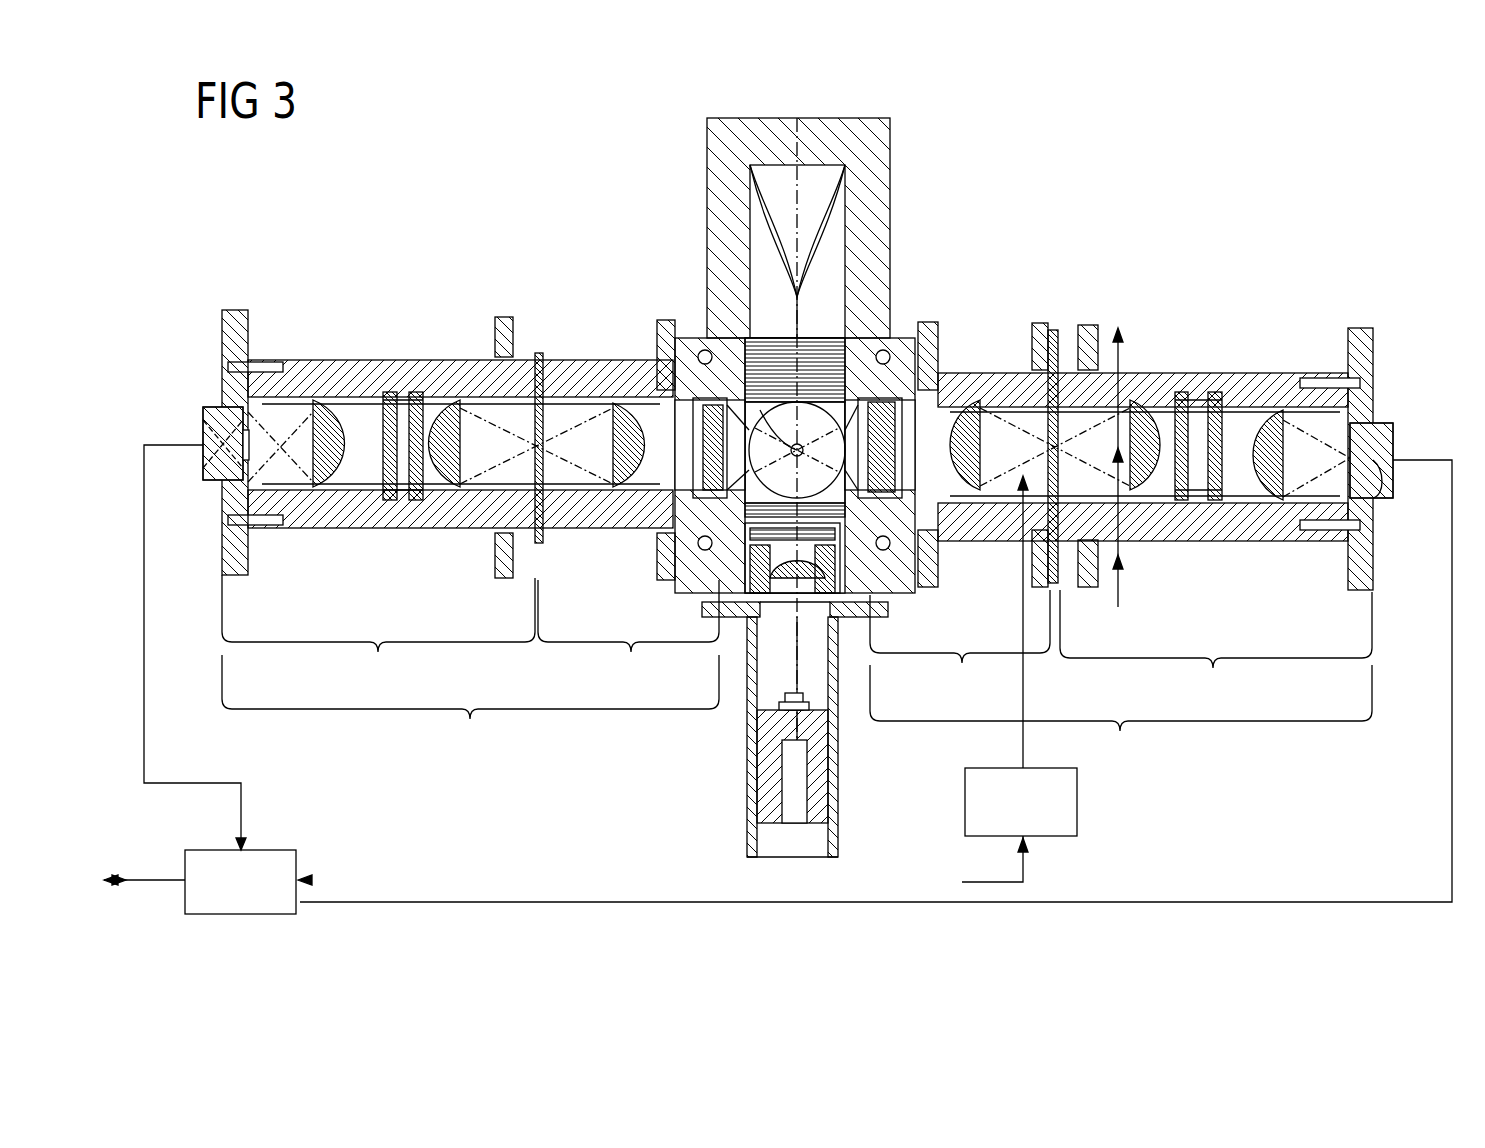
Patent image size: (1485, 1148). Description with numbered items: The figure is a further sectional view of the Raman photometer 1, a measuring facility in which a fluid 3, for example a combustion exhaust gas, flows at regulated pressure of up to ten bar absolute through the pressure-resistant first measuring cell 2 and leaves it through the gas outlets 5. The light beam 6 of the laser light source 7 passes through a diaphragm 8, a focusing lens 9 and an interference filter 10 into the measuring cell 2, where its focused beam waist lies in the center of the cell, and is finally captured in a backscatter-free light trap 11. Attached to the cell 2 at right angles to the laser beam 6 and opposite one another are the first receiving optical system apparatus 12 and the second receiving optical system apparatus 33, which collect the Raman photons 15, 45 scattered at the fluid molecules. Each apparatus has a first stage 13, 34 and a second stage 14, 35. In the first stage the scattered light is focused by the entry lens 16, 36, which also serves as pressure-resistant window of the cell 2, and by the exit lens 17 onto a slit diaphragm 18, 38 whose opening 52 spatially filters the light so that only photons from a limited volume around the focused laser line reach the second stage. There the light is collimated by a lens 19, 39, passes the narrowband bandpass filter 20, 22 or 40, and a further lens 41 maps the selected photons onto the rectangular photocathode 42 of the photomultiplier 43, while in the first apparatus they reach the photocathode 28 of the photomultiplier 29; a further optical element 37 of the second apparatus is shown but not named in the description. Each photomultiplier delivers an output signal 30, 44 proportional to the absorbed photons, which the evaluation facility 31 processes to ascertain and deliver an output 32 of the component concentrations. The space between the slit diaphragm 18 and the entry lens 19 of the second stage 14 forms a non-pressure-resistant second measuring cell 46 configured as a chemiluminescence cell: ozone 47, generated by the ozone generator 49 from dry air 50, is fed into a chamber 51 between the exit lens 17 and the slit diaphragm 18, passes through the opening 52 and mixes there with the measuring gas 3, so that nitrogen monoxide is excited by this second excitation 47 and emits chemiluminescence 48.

The Raman photometer 1 is at (258, 243).
The first measuring cell 2 is at (676, 598).
The fluid 3 is at (1122, 604).
The gas outlets 5 is at (777, 348).
The laser beam 6 is at (805, 672).
The laser light source 7 is at (752, 795).
The diaphragm 8 is at (772, 628).
The focusing lens 9 is at (850, 616).
The interference filter 10 is at (905, 595).
The backscatter-free light trap 11 is at (800, 262).
The first receiving optical system apparatus 12 is at (1121, 716).
The first stage 13 is at (960, 646).
The second stage 14 is at (1216, 648).
The scattered light 15 is at (555, 430).
The entry lens 16 is at (928, 325).
The exit lens 17 is at (960, 400).
The slit diaphragm 18 is at (1045, 355).
The entry lens of second stage 19 is at (1140, 400).
The bandpass filter 20 is at (1190, 400).
The bandpass filter 22 is at (1198, 446).
The photocathode 28 is at (1373, 498).
The photomultiplier 29 is at (1382, 425).
The output signal 30 is at (1443, 458).
The evaluation facility 31 is at (275, 850).
The output 32 is at (152, 880).
The second receiving optical system apparatus 33 is at (470, 706).
The first stage 34 is at (628, 637).
The second stage 35 is at (378, 633).
The entry lens 36 is at (666, 320).
The lens 37 is at (622, 400).
The slit diaphragm 38 is at (504, 318).
The lens 39 is at (448, 400).
The bandpass filter 40 is at (403, 395).
The further lens 41 is at (322, 398).
The photocathode 42 is at (237, 460).
The photomultiplier 43 is at (222, 400).
The output signal 44 is at (152, 435).
The scattered light 45 is at (330, 395).
The second measuring cell 46 is at (1060, 348).
The ozone 47 is at (1025, 687).
The chemiluminescence 48 is at (1100, 410).
The ozone generator 49 is at (964, 802).
The dry air 50 is at (1025, 870).
The chamber 51 is at (1012, 570).
The opening 52 is at (1060, 570).